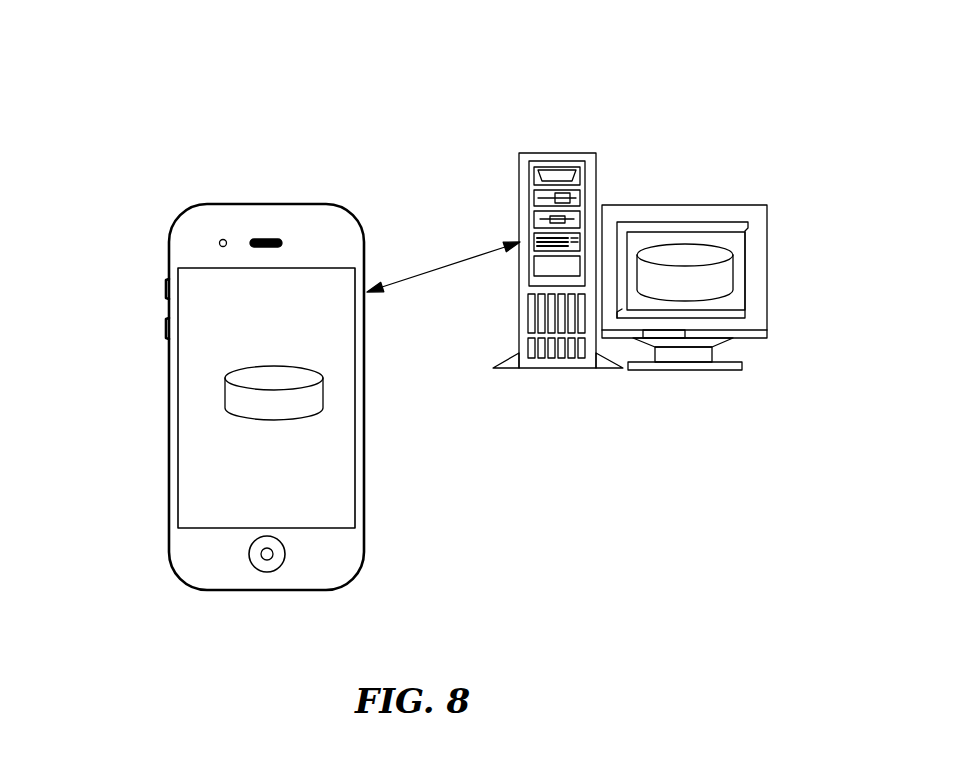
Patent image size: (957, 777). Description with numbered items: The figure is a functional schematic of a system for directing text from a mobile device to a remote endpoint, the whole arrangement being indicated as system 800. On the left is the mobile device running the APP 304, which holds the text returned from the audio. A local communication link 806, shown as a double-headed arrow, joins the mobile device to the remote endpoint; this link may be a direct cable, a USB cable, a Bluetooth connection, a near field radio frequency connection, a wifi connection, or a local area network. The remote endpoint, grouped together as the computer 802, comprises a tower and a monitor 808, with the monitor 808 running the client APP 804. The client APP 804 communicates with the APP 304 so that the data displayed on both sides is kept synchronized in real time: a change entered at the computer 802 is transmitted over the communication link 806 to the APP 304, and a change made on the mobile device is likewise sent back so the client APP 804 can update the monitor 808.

The desktop computer 800 is at (770, 88).
The APP 304 is at (308, 402).
The local communication link 806 is at (436, 268).
The computer 802 is at (685, 316).
The monitor 808 is at (740, 261).
The client APP 804 is at (757, 267).